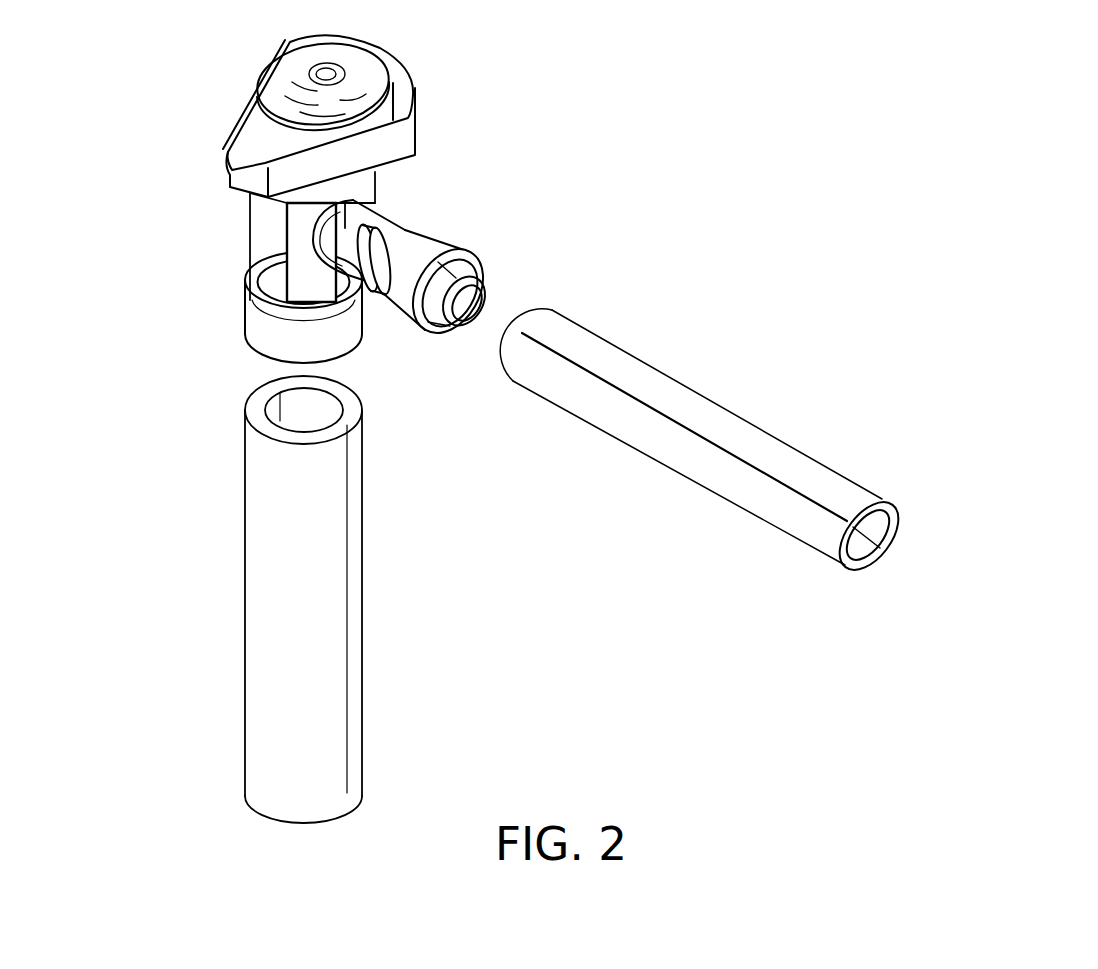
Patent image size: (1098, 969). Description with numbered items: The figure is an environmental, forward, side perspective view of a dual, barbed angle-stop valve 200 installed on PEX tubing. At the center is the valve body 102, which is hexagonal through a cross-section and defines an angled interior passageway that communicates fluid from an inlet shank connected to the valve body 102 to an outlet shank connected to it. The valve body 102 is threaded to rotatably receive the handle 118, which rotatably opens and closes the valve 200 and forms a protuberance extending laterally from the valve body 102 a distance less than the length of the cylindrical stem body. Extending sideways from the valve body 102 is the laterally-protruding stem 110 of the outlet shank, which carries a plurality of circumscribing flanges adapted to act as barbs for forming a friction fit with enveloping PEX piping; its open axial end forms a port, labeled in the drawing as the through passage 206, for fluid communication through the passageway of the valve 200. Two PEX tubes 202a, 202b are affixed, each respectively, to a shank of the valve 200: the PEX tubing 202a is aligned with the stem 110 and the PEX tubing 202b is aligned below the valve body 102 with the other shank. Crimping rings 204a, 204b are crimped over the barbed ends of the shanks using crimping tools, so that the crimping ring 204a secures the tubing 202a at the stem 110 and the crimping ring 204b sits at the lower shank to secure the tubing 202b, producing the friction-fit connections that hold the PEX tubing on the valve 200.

The dual, barbed angle-stop valve 200 is at (1012, 104).
The handle 118 is at (260, 142).
The valve body 102 is at (265, 253).
The crimping ring 204b is at (270, 330).
The PEX tubing 202b is at (275, 667).
The crimping ring 204a is at (430, 248).
The laterally-protruding stem 110 is at (472, 277).
The through passage 206 is at (465, 307).
The PEX tubing 202a is at (708, 423).